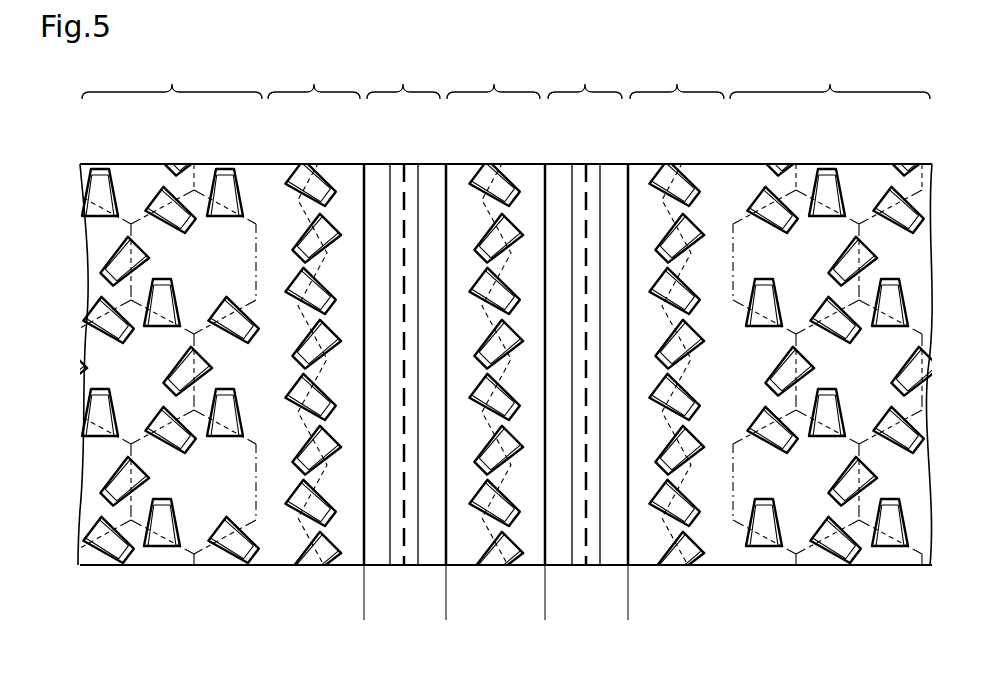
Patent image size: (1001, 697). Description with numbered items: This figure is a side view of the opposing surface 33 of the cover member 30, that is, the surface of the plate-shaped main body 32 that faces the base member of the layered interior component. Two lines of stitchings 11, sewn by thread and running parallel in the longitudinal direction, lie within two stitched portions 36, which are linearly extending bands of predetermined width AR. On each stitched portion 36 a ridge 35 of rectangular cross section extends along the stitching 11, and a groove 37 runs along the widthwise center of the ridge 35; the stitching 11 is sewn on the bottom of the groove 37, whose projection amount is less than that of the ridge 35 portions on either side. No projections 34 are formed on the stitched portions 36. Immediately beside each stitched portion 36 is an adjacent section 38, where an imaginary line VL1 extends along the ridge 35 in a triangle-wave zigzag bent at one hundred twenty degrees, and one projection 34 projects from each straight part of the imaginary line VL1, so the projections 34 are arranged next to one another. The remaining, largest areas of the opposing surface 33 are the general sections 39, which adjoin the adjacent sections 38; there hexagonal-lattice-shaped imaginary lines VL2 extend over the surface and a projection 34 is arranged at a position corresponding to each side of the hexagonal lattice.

The cover member 30 is at (902, 593).
The stitchings 11 is at (404, 182).
The main body 32 is at (95, 462).
The opposing surface 33 is at (89, 466).
The projections 34 is at (97, 268).
The ridges 35 is at (366, 166).
The stitched portions 36 is at (494, 76).
The groove 37 is at (392, 166).
The adjacent section 38 is at (496, 76).
The general sections 39 is at (506, 76).
The predetermined width AR is at (367, 609).
The imaginary line VL1 is at (305, 567).
The hexagonal-lattice-shaped imaginary lines VL2 is at (177, 550).